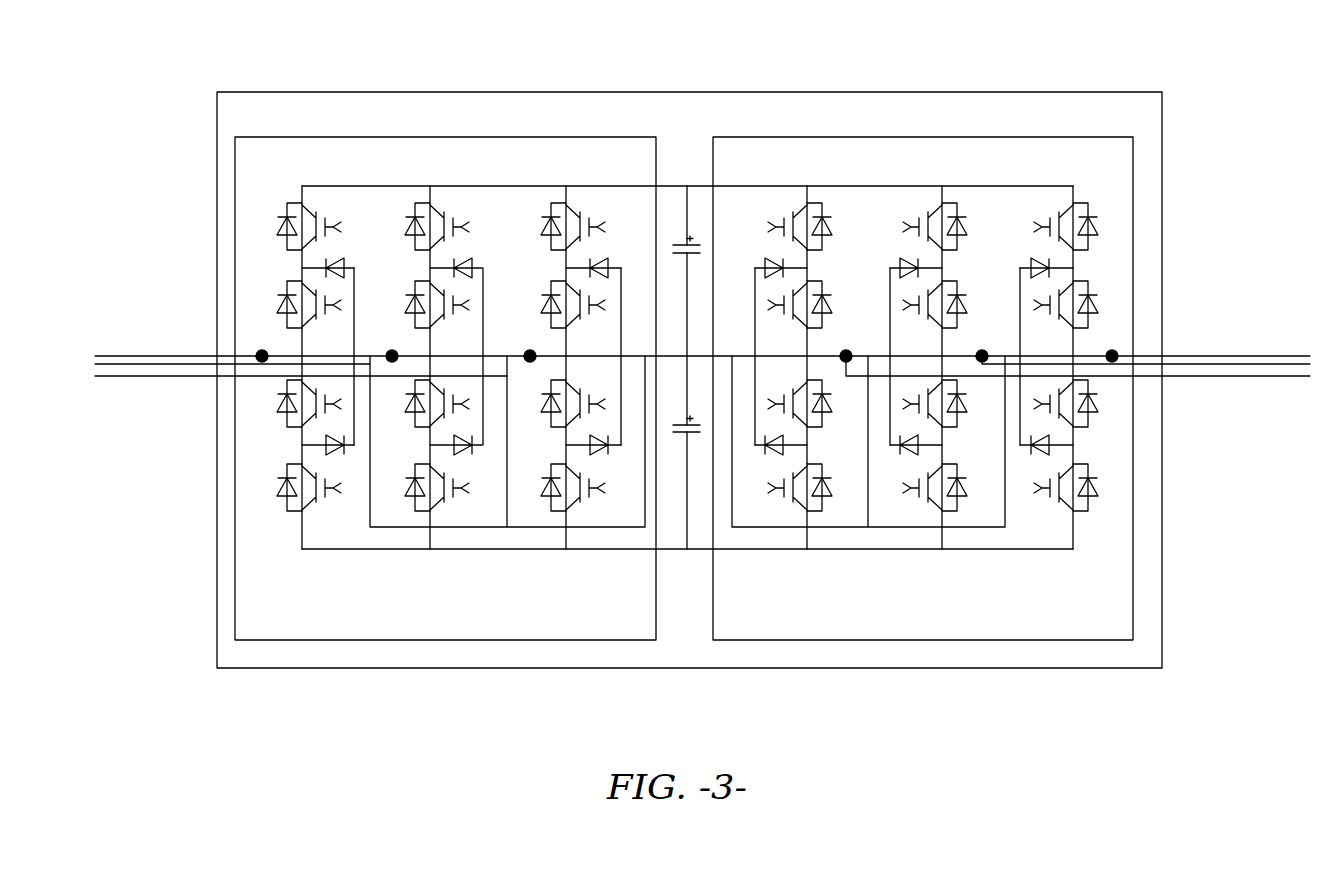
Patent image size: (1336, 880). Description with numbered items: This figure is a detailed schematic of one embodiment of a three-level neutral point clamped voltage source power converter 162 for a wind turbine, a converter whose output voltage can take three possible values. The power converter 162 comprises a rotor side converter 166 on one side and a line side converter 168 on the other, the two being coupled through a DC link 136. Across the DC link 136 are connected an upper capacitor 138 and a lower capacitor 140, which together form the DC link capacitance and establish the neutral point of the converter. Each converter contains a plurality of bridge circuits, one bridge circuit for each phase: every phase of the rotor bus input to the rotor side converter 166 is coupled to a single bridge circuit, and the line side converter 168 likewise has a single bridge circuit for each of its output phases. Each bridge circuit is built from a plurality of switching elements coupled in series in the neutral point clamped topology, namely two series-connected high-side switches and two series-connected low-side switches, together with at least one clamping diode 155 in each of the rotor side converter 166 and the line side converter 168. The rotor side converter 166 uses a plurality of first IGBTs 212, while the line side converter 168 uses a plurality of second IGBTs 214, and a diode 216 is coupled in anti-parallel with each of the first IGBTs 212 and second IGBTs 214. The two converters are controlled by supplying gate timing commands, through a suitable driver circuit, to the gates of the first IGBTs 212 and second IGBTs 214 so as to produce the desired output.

The clamping diode 155 is at (770, 255).
The power converter 162 is at (776, 102).
The rotor side converter 166 is at (1037, 137).
The line side converter 168 is at (538, 137).
The DC link 136 is at (667, 182).
The upper capacitor 138 is at (702, 252).
The lower capacitor 140 is at (690, 434).
The first IGBT 212 is at (797, 207).
The second IGBT 214 is at (311, 207).
The diode 216 is at (276, 228).